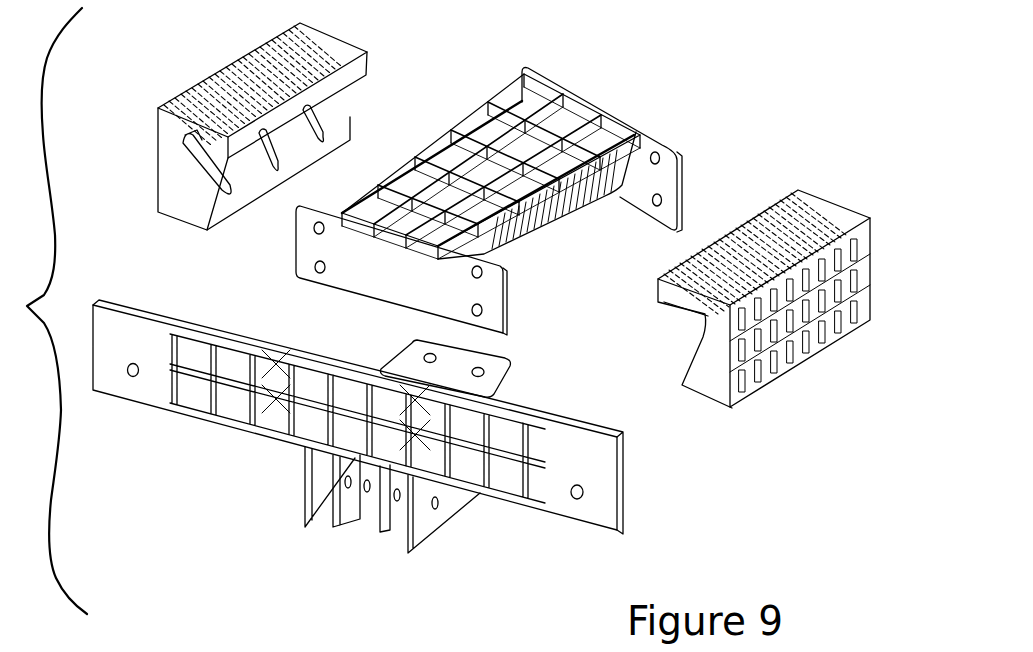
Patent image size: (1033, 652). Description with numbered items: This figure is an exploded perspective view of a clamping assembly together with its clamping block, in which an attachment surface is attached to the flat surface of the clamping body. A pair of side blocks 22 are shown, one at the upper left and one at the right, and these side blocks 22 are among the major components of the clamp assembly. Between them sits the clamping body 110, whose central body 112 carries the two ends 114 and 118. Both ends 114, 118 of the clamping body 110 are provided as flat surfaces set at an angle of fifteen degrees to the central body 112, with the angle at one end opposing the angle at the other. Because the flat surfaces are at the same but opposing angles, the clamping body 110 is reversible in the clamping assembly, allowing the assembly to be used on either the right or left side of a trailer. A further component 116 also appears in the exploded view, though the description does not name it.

The side block 22 is at (200, 82).
The clamping body 110 is at (613, 75).
The central body 112 is at (440, 148).
The end of clamping body 114 is at (368, 273).
The mounting bar 116 is at (563, 520).
The end of clamping body 118 is at (653, 133).